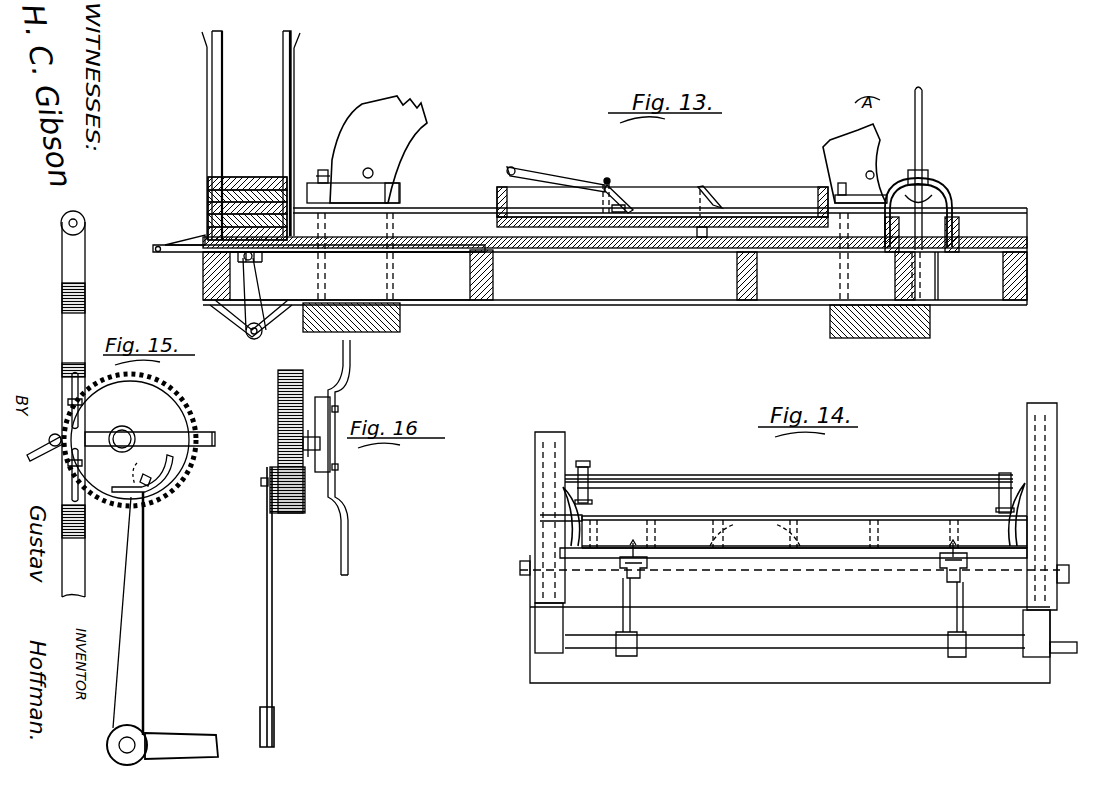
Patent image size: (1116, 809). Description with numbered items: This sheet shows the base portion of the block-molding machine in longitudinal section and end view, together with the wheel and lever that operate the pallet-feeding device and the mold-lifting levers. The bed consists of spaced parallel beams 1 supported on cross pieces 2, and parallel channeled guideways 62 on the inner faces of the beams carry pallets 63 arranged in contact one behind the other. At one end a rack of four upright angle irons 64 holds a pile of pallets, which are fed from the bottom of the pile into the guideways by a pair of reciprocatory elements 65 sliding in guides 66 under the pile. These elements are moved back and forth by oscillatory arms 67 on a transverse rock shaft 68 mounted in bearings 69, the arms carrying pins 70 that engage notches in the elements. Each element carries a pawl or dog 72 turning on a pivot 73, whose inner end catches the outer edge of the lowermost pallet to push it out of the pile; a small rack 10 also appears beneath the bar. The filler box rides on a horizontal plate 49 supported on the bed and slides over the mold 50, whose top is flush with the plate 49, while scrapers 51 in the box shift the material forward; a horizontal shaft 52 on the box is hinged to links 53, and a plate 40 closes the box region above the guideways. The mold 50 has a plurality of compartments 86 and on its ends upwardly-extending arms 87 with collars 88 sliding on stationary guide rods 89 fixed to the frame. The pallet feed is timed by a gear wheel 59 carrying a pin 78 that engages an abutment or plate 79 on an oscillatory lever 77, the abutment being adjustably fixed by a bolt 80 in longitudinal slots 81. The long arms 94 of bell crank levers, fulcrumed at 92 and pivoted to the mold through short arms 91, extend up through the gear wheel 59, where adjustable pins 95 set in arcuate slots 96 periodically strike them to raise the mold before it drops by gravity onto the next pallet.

In FIG. 13, the beams 1 is at (620, 320).
In FIG. 13, the cross pieces 2 is at (830, 318).
In FIG. 14, the cross pieces 2 is at (800, 683).
In FIG. 13, the rack teeth 10 is at (258, 262).
In FIG. 13, the plate 40 is at (760, 192).
In FIG. 13, the horizontal plate 49 is at (700, 237).
In FIG. 13, the mold 50 is at (958, 236).
In FIG. 14, the mold 50 is at (693, 512).
In FIG. 13, the scrapers 51 is at (627, 190).
In FIG. 14, the scrapers 51 is at (795, 492).
In FIG. 13, the horizontal shaft 52 is at (605, 179).
In FIG. 14, the horizontal shaft 52 is at (905, 477).
In FIG. 13, the links 53 is at (546, 175).
In FIG. 15, the gear wheels 59 is at (160, 428).
In FIG. 13, the guideways 62 is at (450, 237).
In FIG. 14, the guideways 62 is at (560, 553).
In FIG. 13, the pallets 63 is at (254, 177).
In FIG. 14, the pallets 63 is at (745, 545).
In FIG. 13, the upright angle irons 64 is at (205, 137).
In FIG. 13, the reciprocatory elements 65 is at (192, 252).
In FIG. 14, the reciprocatory elements 65 is at (640, 576).
In FIG. 13, the guides 66 is at (350, 276).
In FIG. 14, the oscillatory arms 67 is at (630, 596).
In FIG. 13, the rock shaft 68 is at (253, 340).
In FIG. 13, the bearings 69 is at (238, 325).
In FIG. 14, the pins 70 is at (950, 576).
In FIG. 13, the pawl or dog 72 is at (192, 240).
In FIG. 14, the pawl or dog 72 is at (633, 552).
In FIG. 13, the pivot 73 is at (156, 250).
In FIG. 15, the oscillatory lever 77 is at (62, 342).
In FIG. 16, the oscillatory lever 77 is at (348, 522).
In FIG. 15, the pin 78 is at (45, 455).
In FIG. 16, the pin 78 is at (302, 396).
In FIG. 16, the abutment or plate 79 is at (332, 410).
In FIG. 15, the bolt 80 is at (84, 402).
In FIG. 16, the bolt 80 is at (338, 466).
In FIG. 15, the longitudinal slots 81 is at (82, 478).
In FIG. 13, the compartments 86 is at (940, 258).
In FIG. 14, the compartments 86 is at (858, 533).
In FIG. 13, the upwardly-extending arms 87 is at (949, 196).
In FIG. 14, the upwardly-extending arms 87 is at (1030, 508).
In FIG. 13, the collars 88 is at (928, 176).
In FIG. 14, the collars 88 is at (588, 474).
In FIG. 13, the guide rods 89 is at (924, 126).
In FIG. 14, the guide rods 89 is at (560, 468).
In FIG. 15, the short arms 91 is at (180, 736).
In FIG. 15, the fulcrum 92 is at (128, 745).
In FIG. 15, the long arms 94 is at (136, 626).
In FIG. 16, the long arms 94 is at (273, 614).
In FIG. 15, the adjustable pins 95 is at (150, 488).
In FIG. 16, the adjustable pins 95 is at (261, 483).
In FIG. 15, the arcuate slots 96 is at (175, 470).